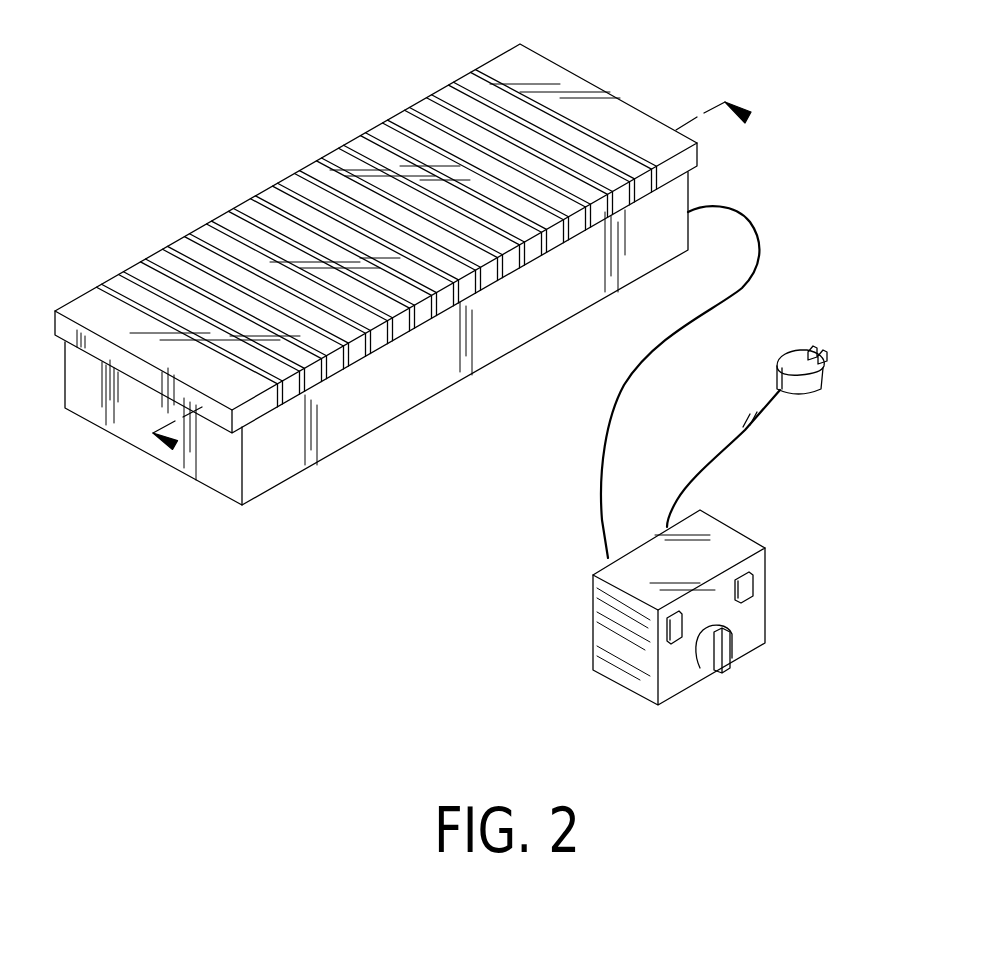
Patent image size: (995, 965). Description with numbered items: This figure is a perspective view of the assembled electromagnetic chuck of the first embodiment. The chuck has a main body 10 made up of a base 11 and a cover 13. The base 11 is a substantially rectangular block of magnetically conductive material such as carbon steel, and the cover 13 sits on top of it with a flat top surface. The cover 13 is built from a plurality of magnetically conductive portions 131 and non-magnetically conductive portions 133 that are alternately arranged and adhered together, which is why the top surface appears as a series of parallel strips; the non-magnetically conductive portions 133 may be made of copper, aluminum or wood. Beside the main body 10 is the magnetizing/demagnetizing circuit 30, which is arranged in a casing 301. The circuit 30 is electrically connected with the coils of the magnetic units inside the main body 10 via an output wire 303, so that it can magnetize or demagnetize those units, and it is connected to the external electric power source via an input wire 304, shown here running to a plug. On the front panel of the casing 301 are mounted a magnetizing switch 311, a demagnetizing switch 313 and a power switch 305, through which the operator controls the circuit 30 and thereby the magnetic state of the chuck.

The main body 10 is at (231, 116).
The base 11 is at (93, 413).
The cover 13 is at (115, 277).
The magnetically conductive portions 131 is at (557, 262).
The non-magnetically conductive portions 133 is at (472, 64).
The magnetizing/demagnetizing circuit 30 is at (601, 682).
The casing 301 is at (742, 540).
The output wire 303 is at (657, 347).
The input wire 304 is at (737, 433).
The power switch 305 is at (720, 674).
The magnetizing switch 311 is at (753, 586).
The demagnetizing switch 313 is at (677, 642).